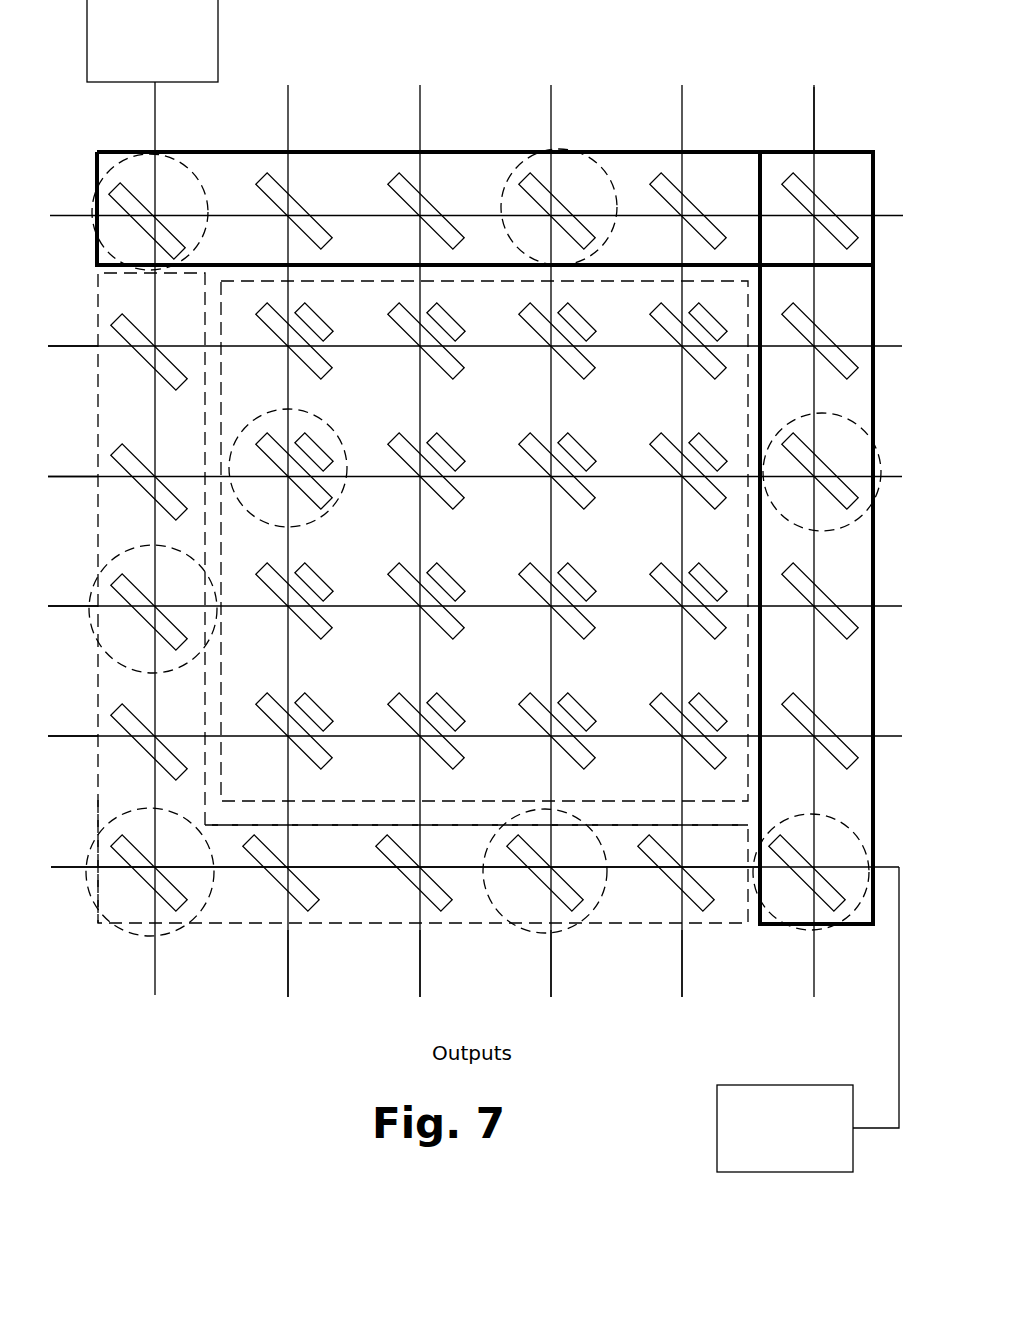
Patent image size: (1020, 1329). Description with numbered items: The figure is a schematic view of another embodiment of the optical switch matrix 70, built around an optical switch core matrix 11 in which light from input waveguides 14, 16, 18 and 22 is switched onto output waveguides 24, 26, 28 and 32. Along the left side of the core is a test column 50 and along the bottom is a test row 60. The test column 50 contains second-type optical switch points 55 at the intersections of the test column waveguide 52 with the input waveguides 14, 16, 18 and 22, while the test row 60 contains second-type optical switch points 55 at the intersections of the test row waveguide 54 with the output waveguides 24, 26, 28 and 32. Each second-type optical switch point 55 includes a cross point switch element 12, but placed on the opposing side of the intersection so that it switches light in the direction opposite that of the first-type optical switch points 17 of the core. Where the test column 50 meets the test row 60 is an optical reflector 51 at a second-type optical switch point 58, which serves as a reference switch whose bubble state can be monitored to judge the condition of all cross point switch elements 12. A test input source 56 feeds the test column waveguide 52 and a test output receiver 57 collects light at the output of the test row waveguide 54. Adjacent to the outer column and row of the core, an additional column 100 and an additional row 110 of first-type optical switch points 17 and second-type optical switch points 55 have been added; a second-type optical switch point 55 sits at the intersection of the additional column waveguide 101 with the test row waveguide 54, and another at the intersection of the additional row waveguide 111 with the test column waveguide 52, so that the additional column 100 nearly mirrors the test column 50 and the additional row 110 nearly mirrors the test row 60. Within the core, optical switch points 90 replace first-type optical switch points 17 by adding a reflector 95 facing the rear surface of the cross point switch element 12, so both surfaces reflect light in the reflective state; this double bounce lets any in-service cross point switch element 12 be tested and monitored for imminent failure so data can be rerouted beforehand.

The optical switch matrix 70 is at (368, 59).
The additional row 110 is at (248, 181).
The additional column 100 is at (862, 295).
The test column 50 is at (128, 301).
The test row 60 is at (738, 858).
The switch core matrix 11 is at (250, 310).
The additional row waveguide 111 is at (82, 215).
The first-type optical switch point 17 is at (586, 120).
The additional column waveguide 101 is at (815, 98).
The test column waveguide 52 is at (157, 328).
The input waveguide 14 is at (88, 350).
The input waveguide 16 is at (88, 480).
The input waveguide 18 is at (82, 610).
The input waveguide 22 is at (87, 740).
The cross point switch element 12 is at (392, 310).
The reflector 95 is at (316, 448).
The optical switch point 90 is at (340, 398).
The optical reflector 51 is at (140, 877).
The second-type optical switch point 58 is at (90, 825).
The test row waveguide 54 is at (240, 868).
The output waveguide 24 is at (287, 968).
The output waveguide 26 is at (420, 972).
The output waveguide 28 is at (551, 972).
The output waveguide 32 is at (682, 972).
The second-type optical switch point 55 is at (118, 150).
The test input source 56 is at (120, 29).
The test output receiver 57 is at (748, 1114).